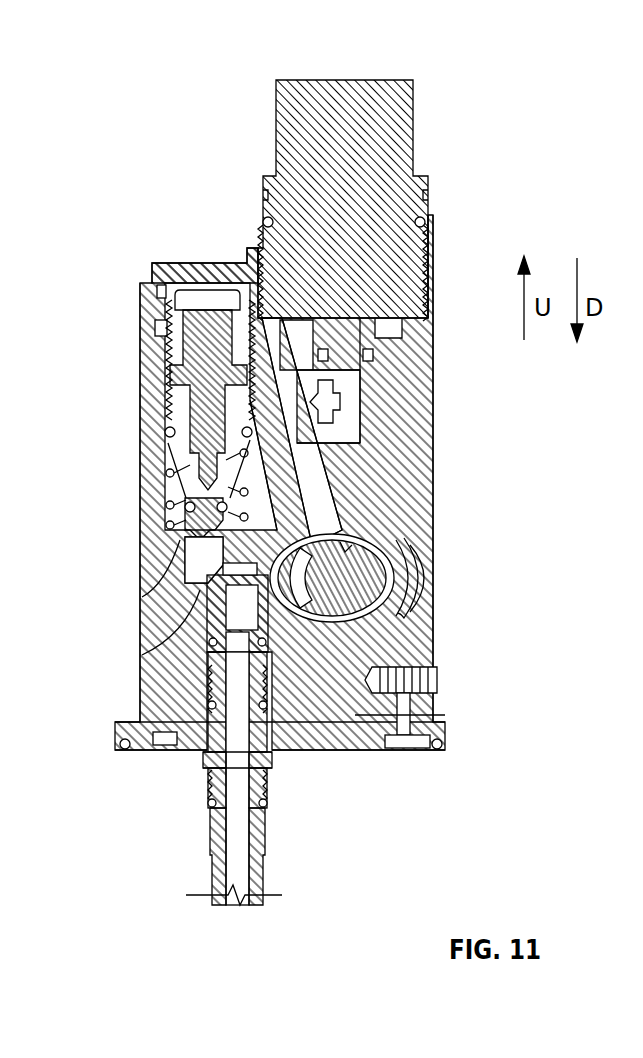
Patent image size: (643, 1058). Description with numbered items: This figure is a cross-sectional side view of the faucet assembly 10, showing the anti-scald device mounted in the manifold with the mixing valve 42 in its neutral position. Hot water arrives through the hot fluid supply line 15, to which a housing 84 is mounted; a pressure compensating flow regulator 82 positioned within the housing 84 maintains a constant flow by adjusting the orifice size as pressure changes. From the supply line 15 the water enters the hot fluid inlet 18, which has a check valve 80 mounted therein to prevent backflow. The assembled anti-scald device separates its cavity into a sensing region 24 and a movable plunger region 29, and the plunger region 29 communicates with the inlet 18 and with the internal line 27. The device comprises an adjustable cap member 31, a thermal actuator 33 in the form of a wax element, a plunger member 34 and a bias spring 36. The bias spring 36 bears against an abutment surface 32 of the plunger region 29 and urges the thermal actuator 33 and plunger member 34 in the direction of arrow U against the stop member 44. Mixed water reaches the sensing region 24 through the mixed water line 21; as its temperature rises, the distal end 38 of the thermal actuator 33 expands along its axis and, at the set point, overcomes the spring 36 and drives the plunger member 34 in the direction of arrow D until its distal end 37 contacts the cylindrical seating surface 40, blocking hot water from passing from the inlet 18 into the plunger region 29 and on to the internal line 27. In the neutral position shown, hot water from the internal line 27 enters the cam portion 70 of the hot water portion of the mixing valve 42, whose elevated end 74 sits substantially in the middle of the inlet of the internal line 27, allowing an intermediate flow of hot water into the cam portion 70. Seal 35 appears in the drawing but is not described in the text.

The faucet assembly 10 is at (235, 74).
The hot fluid supply line 15 is at (252, 858).
The hot fluid inlet 18 is at (150, 695).
The mixed fluid/water line 21 is at (340, 472).
The sensing region 24 is at (143, 329).
The internal line 27 is at (300, 505).
The plunger region 29 is at (160, 500).
The adjustable cap member 31 is at (185, 263).
The abutment surface 32 is at (212, 557).
The thermal actuator 33 is at (195, 355).
The plunger member 34 is at (162, 465).
The seal ring 35 is at (146, 434).
The bias spring 36 is at (175, 540).
The distal end of plunger member 37 is at (165, 615).
The distal end of thermal actuator 38 is at (380, 460).
The cylindrical seating surface 40 is at (160, 655).
The mixing valve 42 is at (290, 563).
The stop member 44 is at (250, 248).
The cam portion 70 is at (328, 640).
The elevated end 74 is at (412, 608).
The check valve 80 is at (322, 622).
The pressure compensating flow regulator 82 is at (205, 762).
The housing 84 is at (272, 795).